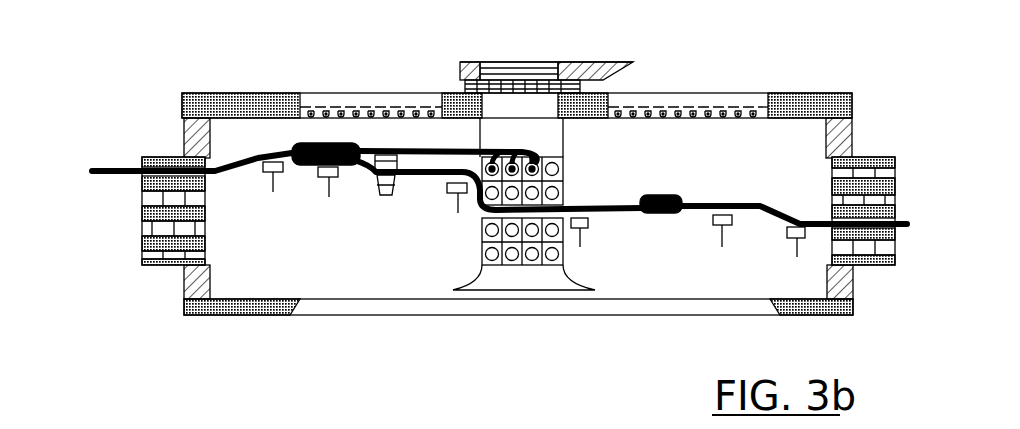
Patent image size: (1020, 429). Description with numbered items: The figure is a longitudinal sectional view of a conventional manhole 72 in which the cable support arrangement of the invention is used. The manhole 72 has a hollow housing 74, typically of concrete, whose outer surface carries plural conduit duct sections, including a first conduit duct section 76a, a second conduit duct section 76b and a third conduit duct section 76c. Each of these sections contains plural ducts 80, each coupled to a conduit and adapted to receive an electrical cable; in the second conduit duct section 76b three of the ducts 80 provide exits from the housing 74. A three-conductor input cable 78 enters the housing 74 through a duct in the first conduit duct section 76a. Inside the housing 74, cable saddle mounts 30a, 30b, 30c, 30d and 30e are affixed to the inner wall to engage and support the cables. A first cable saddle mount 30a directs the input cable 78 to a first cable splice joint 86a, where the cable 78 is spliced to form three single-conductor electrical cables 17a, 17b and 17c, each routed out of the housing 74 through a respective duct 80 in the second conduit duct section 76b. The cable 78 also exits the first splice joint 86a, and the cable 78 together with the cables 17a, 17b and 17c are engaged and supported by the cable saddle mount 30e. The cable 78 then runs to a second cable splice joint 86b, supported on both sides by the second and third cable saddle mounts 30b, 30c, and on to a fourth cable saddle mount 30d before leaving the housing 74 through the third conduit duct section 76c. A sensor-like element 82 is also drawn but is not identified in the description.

The manhole 72 is at (163, 292).
The hollow housing 74 is at (312, 307).
The first conduit duct section 76a is at (140, 212).
The second conduit duct section 76b is at (542, 282).
The third conduit duct section 76c is at (868, 157).
The three-conductor input cable 78 is at (107, 167).
The duct 80 is at (556, 166).
The sensor 82 is at (337, 178).
The first cable splice joint 86a is at (297, 145).
The second cable splice joint 86b is at (685, 185).
The single conductor electrical cable 17a is at (486, 163).
The single conductor electrical cable 17b is at (526, 158).
The single conductor electrical cable 17c is at (548, 158).
The first cable saddle mount 30a is at (268, 177).
The second cable saddle mount 30b is at (588, 230).
The third cable saddle mount 30c is at (717, 227).
The fourth cable saddle mount 30d is at (795, 240).
The cable saddle mount 30e is at (381, 138).